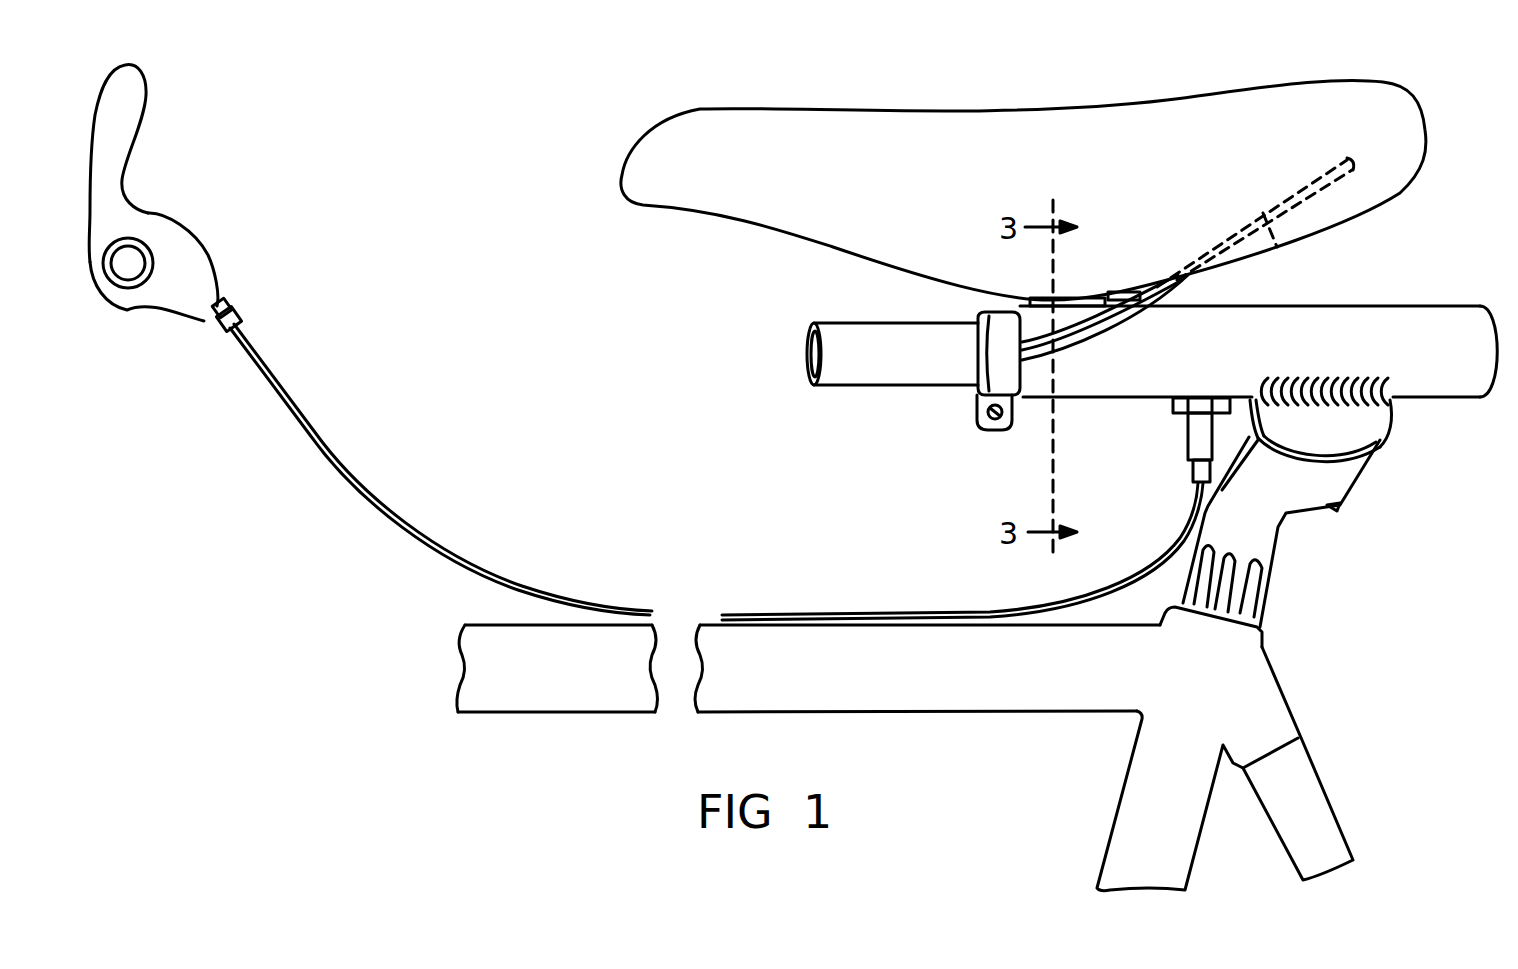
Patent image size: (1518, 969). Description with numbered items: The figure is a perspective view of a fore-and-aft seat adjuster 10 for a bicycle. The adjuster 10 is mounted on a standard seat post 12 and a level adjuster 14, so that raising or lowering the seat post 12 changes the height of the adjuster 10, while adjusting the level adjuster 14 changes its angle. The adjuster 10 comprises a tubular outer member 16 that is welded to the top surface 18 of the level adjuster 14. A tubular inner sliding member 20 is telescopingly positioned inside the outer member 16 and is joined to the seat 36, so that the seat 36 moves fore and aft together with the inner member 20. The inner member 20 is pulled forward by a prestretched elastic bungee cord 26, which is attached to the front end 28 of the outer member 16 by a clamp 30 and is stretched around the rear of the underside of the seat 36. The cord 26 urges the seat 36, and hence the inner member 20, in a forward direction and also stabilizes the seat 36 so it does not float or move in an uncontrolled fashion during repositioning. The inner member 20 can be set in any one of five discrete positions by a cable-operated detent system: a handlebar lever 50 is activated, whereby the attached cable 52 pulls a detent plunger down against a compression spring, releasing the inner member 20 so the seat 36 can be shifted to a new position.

The seat adjuster 10 is at (815, 498).
The seat post 12 is at (1253, 553).
The level adjuster 14 is at (1370, 438).
The tubular outer member 16 is at (1440, 305).
The top surface 18 is at (1390, 402).
The tubular inner sliding member 20 is at (882, 383).
The elastic bungee cord 26 is at (1280, 247).
The front end 28 is at (919, 353).
The clamp 30 is at (1003, 358).
The seat 36 is at (1363, 207).
The handlebar lever 50 is at (140, 126).
The cable 52 is at (720, 617).